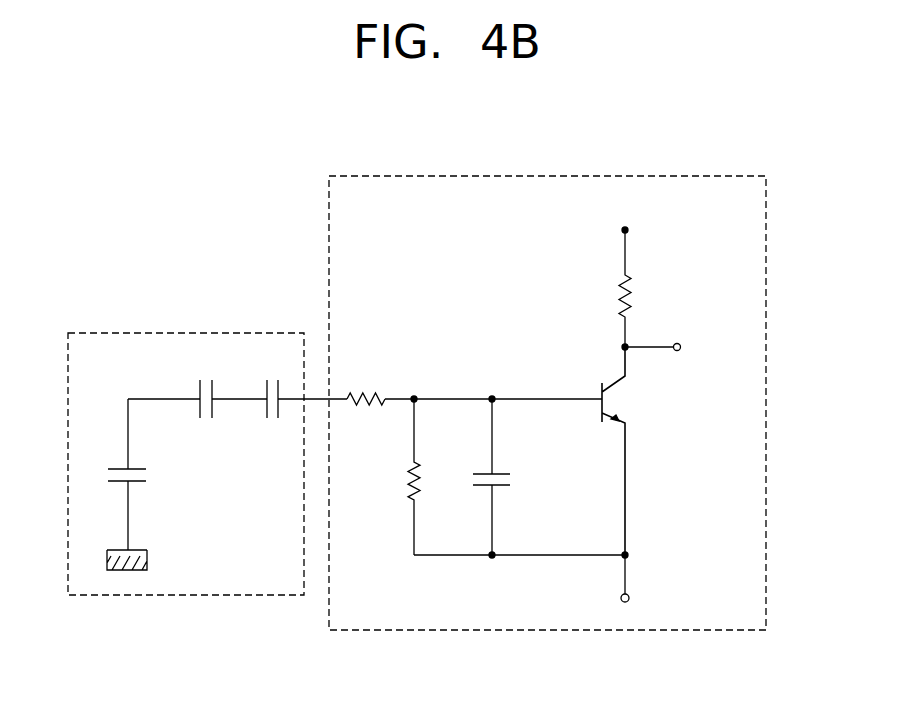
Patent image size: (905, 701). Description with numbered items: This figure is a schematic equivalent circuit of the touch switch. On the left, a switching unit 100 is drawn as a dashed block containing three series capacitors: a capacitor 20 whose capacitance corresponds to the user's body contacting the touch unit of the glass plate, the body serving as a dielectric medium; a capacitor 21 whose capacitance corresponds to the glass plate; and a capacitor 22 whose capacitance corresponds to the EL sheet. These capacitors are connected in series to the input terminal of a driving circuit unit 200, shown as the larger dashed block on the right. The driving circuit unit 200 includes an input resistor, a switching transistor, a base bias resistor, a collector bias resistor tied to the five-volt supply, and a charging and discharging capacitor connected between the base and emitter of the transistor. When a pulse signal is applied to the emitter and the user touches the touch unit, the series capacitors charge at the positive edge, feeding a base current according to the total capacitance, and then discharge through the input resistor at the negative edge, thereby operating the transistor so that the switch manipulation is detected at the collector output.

The switching unit 100 is at (199, 333).
The driving circuit unit 200 is at (584, 176).
The capacitor 20 is at (146, 481).
The capacitor 21 is at (212, 418).
The capacitor 22 is at (278, 418).